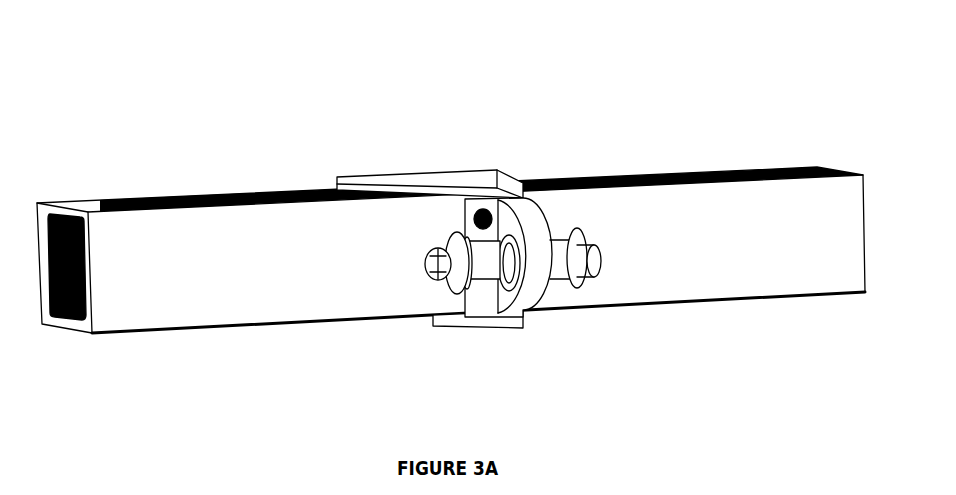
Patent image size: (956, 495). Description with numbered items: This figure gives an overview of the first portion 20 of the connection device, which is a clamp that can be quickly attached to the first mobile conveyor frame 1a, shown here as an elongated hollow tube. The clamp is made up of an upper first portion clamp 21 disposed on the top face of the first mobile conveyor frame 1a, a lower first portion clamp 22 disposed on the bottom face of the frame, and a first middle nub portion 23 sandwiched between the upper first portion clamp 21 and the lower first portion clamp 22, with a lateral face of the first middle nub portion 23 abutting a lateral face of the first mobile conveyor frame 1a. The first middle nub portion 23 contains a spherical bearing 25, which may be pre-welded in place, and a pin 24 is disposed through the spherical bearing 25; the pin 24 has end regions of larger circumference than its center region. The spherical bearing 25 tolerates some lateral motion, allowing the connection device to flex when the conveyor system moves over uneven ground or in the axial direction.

The first mobile conveyor frame 1a is at (154, 250).
The first portion of the connection device 20 is at (410, 158).
The upper first portion clamp 21 is at (468, 172).
The lower first portion clamp 22 is at (485, 325).
The first middle nub portion 23 is at (482, 295).
The pin 24 is at (560, 260).
The spherical bearing 25 is at (507, 240).